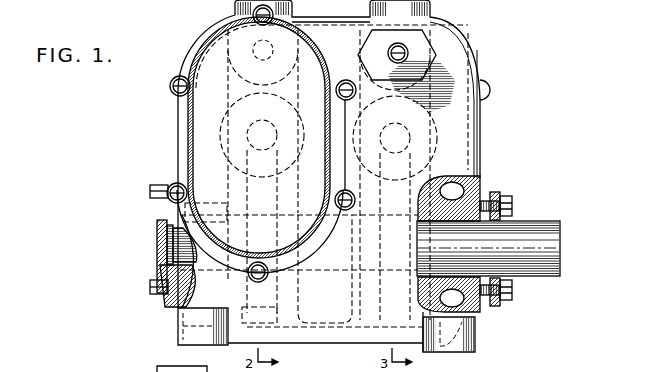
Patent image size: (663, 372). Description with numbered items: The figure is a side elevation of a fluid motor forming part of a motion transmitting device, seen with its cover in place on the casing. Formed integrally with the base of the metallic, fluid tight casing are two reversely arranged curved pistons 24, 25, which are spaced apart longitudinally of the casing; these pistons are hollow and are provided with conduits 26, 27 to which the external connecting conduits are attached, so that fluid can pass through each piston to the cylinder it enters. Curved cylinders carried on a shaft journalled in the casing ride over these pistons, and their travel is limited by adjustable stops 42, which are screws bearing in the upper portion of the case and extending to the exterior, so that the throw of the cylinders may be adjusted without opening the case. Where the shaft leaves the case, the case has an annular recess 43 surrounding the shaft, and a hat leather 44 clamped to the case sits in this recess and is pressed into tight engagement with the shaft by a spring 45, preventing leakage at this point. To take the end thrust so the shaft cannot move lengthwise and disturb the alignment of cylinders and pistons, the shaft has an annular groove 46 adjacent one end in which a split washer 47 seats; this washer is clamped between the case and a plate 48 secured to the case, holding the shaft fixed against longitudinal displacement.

The curved piston 24 is at (228, 172).
The curved piston 25 is at (428, 170).
The conduit 26 is at (252, 229).
The conduit 27 is at (390, 246).
The adjustable stop 42 is at (258, 56).
The annular recess 43 is at (478, 216).
The hat leather 44 is at (493, 302).
The spring 45 is at (488, 198).
The annular groove 46 is at (167, 251).
The split washer 47 is at (163, 273).
The plate 48 is at (157, 234).